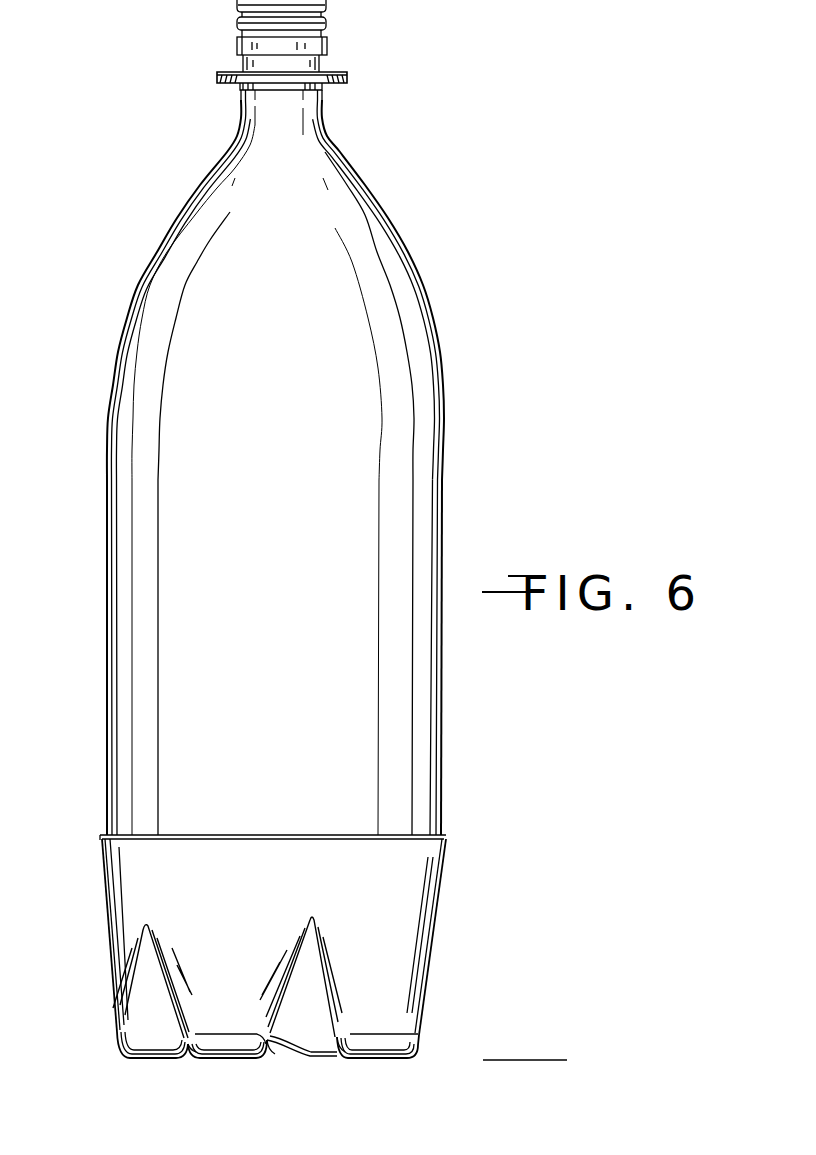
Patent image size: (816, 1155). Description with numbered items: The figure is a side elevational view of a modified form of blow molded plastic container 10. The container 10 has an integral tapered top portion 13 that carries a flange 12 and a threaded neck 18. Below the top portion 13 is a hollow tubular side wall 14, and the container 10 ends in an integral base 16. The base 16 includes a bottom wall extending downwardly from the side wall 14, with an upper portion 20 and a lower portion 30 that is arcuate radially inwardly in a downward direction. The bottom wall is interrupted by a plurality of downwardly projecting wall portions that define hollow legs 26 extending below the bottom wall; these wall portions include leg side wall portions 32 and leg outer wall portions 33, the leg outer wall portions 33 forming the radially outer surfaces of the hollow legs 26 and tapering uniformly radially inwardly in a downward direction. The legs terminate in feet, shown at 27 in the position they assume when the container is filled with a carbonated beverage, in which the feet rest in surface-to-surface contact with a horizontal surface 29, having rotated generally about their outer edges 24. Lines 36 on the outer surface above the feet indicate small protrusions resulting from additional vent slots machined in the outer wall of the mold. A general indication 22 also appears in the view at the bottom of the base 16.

The blow molded plastic container 10 is at (424, 224).
The flange 12 is at (347, 77).
The integral tapered top portion 13 is at (333, 158).
The hollow tubular side wall 14 is at (444, 438).
The integral base 16 is at (470, 844).
The threaded neck 18 is at (323, 22).
The upper portion of bottom wall 20 is at (442, 895).
The bottom wall 22 is at (254, 1072).
The outer edges of feet 24 is at (200, 1060).
The hollow legs 26 is at (208, 1043).
The feet in filled position 27 is at (220, 1060).
The horizontal surface 29 is at (518, 1060).
The lower portion of bottom wall 30 is at (158, 965).
The leg side wall portions 32 is at (323, 997).
The leg outer wall portions 33 is at (118, 976).
The lines 36 is at (218, 1033).